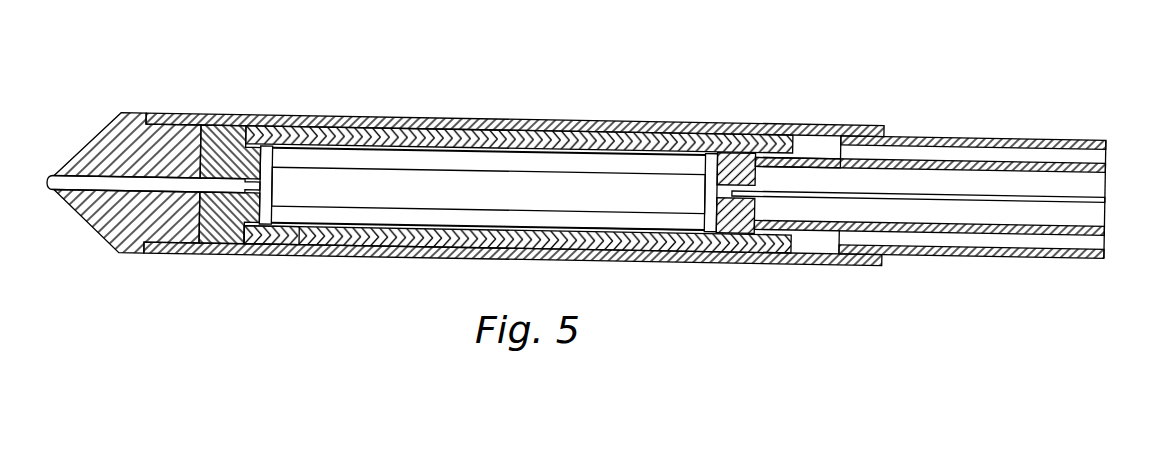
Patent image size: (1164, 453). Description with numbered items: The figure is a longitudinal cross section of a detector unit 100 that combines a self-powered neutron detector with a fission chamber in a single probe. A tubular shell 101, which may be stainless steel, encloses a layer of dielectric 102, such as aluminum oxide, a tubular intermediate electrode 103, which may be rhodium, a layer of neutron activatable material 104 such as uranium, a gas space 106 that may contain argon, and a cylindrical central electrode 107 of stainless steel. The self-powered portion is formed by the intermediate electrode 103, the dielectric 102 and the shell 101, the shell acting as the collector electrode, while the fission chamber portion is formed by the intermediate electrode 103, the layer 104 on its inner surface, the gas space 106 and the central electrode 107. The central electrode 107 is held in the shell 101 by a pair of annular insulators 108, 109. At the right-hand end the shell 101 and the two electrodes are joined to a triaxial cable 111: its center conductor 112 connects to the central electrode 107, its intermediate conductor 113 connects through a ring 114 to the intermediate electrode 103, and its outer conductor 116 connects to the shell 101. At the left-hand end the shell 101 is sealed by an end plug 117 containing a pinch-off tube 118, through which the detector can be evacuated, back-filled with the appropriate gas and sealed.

The detector unit 100 is at (450, 99).
The tubular shell 101 is at (506, 120).
The layer of dielectric 102 is at (367, 244).
The tubular intermediate electrode 103 is at (283, 234).
The layer of neutron activatable material 104 is at (613, 150).
The gas space 106 is at (657, 224).
The cylindrical central electrode 107 is at (679, 178).
The annular insulator 108 is at (216, 126).
The annular insulator 109 is at (752, 232).
The triaxial cable 111 is at (1008, 128).
The center conductor 112 is at (946, 200).
The intermediate conductor 113 is at (1025, 229).
The ring 114 is at (773, 153).
The outer conductor 116 is at (902, 262).
The end plug 117 is at (88, 223).
The pinch-off tube 118 is at (137, 161).